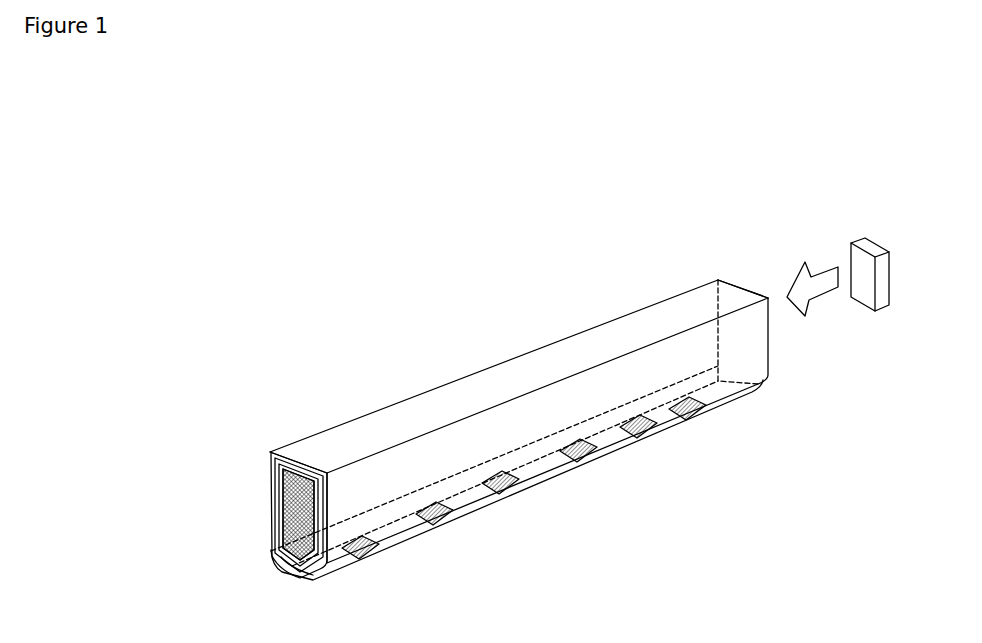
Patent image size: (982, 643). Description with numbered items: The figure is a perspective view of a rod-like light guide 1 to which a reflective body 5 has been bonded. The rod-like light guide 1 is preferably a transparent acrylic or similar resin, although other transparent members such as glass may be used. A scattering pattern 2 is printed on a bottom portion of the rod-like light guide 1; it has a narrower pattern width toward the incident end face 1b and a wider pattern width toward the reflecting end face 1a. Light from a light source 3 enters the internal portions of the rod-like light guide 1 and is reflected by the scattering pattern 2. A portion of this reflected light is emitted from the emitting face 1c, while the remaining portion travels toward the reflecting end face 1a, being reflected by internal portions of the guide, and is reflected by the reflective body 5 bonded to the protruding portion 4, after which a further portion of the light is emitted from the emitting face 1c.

The rod-like light guide 1 is at (493, 409).
The reflecting end face 1a is at (267, 447).
The incident end face 1b is at (767, 293).
The emitting face 1c is at (448, 392).
The scattering pattern 2 is at (366, 560).
The light source 3 is at (863, 243).
The protruding portion 4 is at (273, 557).
The reflective body 5 is at (267, 523).